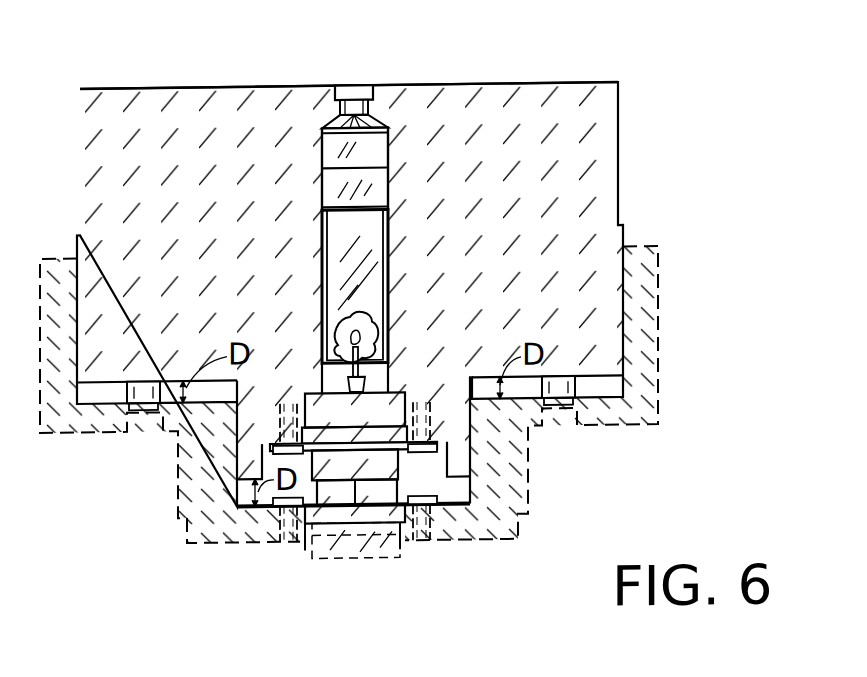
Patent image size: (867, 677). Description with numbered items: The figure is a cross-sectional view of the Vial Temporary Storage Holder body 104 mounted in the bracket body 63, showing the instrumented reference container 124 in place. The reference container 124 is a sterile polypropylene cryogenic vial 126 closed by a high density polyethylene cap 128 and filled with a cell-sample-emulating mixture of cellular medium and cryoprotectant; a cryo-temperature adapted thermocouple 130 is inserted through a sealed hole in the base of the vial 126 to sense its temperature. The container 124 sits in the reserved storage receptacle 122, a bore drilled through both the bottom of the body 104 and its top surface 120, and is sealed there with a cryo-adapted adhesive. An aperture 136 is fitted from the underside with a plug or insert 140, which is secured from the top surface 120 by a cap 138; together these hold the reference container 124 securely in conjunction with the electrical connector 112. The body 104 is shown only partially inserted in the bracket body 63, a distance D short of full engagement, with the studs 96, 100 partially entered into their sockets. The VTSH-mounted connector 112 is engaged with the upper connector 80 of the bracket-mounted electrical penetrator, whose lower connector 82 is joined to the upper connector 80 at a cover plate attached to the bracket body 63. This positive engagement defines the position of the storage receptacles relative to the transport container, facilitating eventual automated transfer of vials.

The bracket body 63 is at (662, 361).
The upper connector 80 is at (400, 484).
The lower connector 82 is at (400, 556).
The stud 96 is at (145, 407).
The stud 100 is at (562, 410).
The central body 104 is at (620, 203).
The electrical connector 112 is at (350, 467).
The top surface 120 is at (588, 85).
The reserved storage receptacle 122 is at (384, 298).
The reference container 124 is at (307, 280).
The cryogenic vial 126 is at (388, 235).
The cap 128 is at (390, 180).
The thermocouple 130 is at (383, 340).
The aperture 136 is at (364, 72).
The cap 138 is at (346, 87).
The plug or insert 140 is at (387, 125).